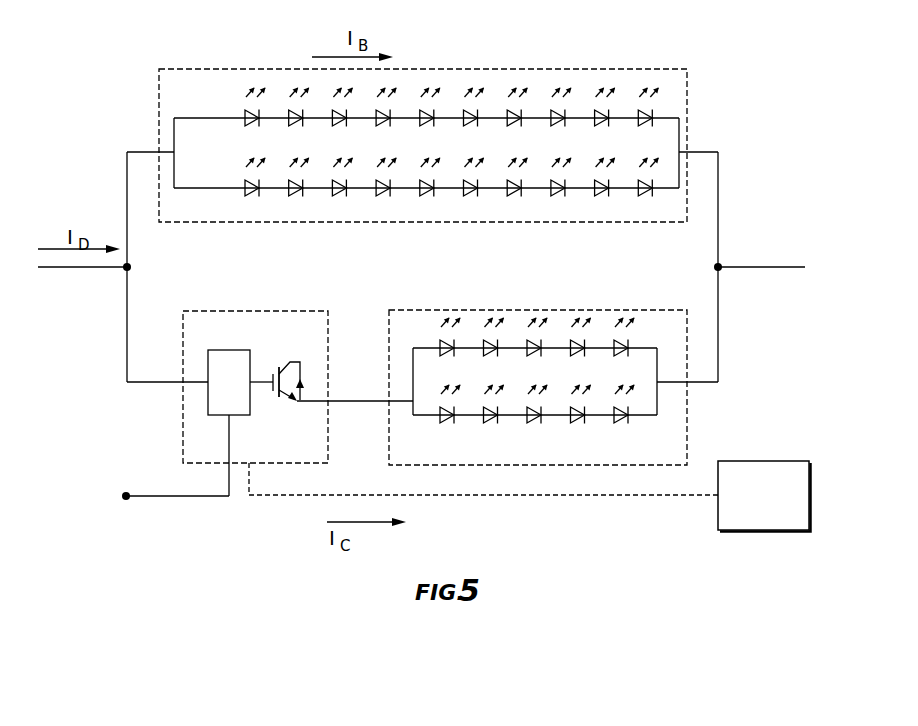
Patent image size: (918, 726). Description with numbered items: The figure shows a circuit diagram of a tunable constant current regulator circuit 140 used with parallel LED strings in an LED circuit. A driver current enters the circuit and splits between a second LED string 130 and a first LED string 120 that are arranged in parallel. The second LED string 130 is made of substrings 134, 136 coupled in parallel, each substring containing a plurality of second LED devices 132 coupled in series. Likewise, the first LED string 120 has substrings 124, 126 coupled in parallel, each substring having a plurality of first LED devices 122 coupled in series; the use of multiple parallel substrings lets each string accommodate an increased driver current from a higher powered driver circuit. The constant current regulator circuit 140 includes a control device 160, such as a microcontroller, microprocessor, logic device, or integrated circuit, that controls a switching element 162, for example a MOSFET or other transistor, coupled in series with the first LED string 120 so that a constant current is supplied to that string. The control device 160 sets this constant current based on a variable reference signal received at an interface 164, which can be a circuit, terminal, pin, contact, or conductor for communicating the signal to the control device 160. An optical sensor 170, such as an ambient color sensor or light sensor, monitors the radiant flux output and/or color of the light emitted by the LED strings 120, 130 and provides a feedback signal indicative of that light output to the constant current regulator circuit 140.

The first LED string 120 is at (566, 353).
The first LED devices 122 is at (534, 418).
The substring 124 is at (656, 347).
The second LED sub-string 126 is at (545, 423).
The second LED string 130 is at (423, 114).
The second LED devices 132 is at (297, 127).
The substring 134 is at (426, 112).
The substring 136 is at (219, 186).
The constant current regulator circuit 140 is at (273, 347).
The control device 160 is at (222, 349).
The switching element 162 is at (301, 364).
The interface 164 is at (126, 500).
The optical sensor 170 is at (738, 532).